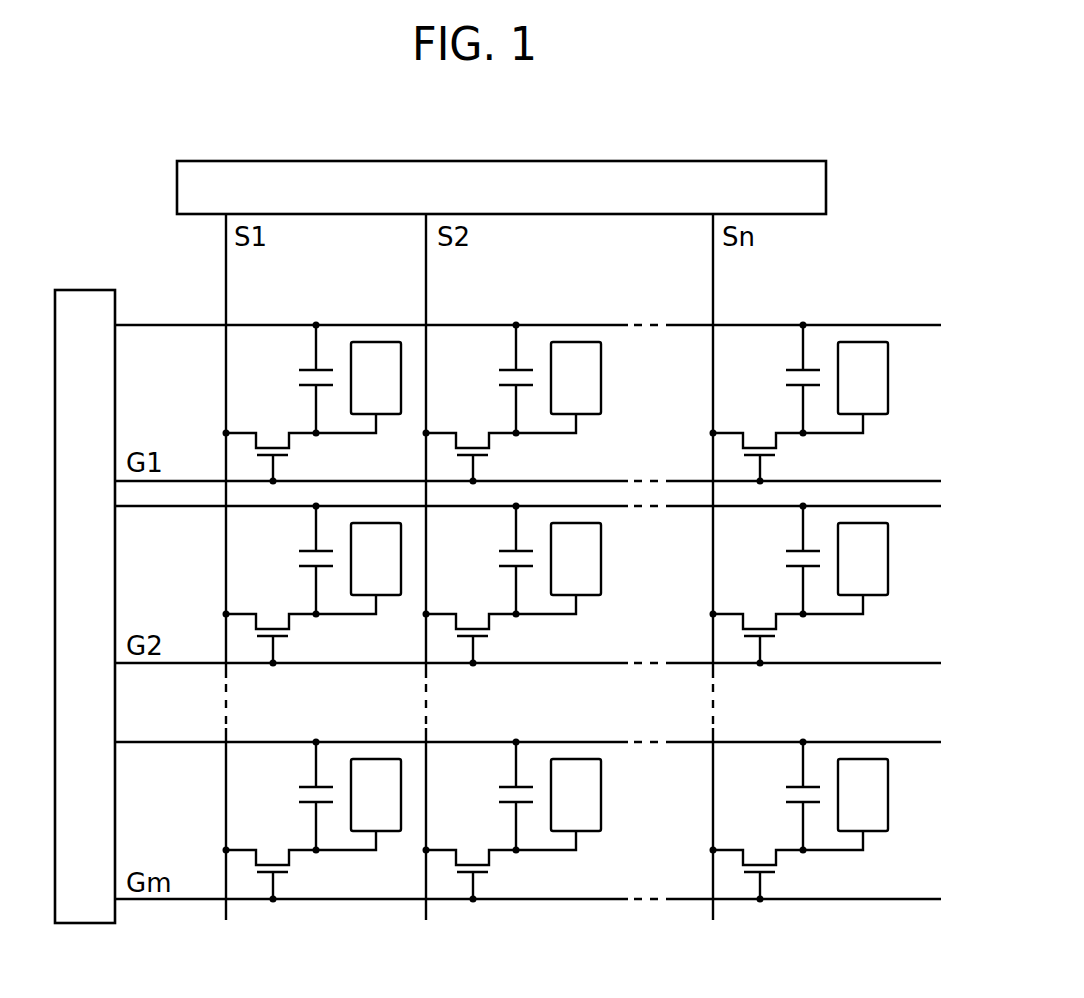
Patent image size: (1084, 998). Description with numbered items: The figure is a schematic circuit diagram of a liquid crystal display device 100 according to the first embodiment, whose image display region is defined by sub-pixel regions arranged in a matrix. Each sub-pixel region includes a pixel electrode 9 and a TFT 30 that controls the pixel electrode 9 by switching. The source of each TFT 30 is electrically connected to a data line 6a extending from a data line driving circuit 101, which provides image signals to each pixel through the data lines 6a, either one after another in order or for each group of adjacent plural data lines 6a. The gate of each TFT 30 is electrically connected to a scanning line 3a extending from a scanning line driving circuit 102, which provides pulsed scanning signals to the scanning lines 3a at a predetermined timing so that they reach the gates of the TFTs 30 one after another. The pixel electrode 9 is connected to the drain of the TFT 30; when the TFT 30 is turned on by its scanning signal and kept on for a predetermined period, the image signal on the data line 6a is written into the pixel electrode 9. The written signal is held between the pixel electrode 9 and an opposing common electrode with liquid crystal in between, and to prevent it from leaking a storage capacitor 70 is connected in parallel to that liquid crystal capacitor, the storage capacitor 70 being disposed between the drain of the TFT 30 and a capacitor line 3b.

The liquid crystal display device 100 is at (897, 272).
The data line driving circuit 101 is at (177, 190).
The scanning line driving circuit 102 is at (86, 298).
The scanning line 3a is at (210, 481).
The capacitor line 3b is at (207, 325).
The data line 6a is at (228, 315).
The pixel electrode 9 is at (376, 350).
The storage capacitor 70 is at (292, 377).
The TFT 30 is at (306, 455).